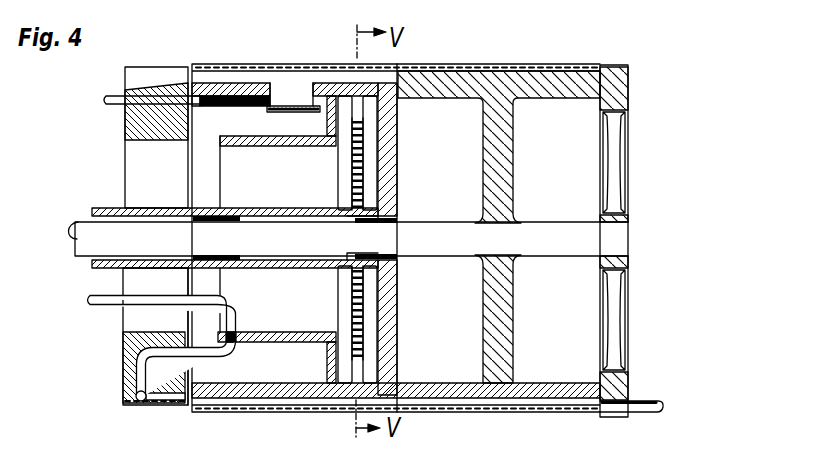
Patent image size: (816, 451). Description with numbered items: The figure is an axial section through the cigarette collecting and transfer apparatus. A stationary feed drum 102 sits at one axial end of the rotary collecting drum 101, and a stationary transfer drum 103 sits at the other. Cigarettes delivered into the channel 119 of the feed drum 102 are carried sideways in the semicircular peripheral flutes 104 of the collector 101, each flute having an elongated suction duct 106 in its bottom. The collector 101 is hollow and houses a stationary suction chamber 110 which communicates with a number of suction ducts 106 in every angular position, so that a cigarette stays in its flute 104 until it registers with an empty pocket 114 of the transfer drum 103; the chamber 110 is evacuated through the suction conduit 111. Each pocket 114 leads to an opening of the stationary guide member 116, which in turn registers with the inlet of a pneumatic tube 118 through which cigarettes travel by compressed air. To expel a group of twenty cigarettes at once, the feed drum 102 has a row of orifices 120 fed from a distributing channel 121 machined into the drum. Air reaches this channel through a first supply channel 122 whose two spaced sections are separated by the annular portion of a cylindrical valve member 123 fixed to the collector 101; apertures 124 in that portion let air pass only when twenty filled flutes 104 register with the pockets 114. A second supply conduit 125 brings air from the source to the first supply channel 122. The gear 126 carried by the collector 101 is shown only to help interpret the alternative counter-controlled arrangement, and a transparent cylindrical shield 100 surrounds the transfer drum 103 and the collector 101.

The cylindrical shield 100 is at (468, 404).
The collecting drum 101 is at (269, 398).
The feed drum 102 is at (132, 126).
The transfer drum 103 is at (497, 385).
The flute 104 is at (318, 408).
The suction duct 106 is at (284, 84).
The suction chamber 110 is at (312, 102).
The suction conduit 111 is at (113, 94).
The pocket 114 is at (417, 407).
The guide member 116 is at (606, 398).
The pneumatic tube 118 is at (654, 413).
The channel 119 is at (141, 72).
The orifice 120 is at (178, 403).
The distributing channel 121 is at (146, 406).
The first supply channel 122 is at (237, 321).
The valve member 123 is at (321, 342).
The aperture 124 is at (233, 141).
The second supply conduit 125 is at (211, 297).
The gear 126 is at (356, 320).